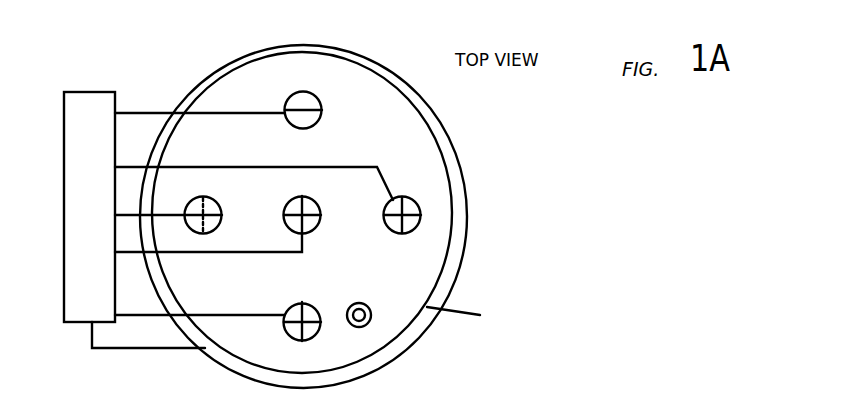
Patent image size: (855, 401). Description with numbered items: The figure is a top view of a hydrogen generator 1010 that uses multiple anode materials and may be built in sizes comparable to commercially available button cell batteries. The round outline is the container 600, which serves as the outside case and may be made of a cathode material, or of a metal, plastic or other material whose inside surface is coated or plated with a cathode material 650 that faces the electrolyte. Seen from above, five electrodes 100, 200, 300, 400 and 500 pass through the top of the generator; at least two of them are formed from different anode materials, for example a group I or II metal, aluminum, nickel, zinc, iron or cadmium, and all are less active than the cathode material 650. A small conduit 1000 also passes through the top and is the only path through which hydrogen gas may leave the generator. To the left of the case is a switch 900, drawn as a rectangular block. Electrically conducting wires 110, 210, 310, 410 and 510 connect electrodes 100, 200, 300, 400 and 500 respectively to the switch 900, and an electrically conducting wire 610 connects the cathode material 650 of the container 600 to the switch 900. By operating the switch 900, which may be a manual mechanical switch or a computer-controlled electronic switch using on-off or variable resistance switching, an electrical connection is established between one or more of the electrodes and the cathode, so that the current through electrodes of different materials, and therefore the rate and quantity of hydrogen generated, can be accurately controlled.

The electrode 100 is at (303, 131).
The electrically conducting wire 110 is at (229, 113).
The electrode 200 is at (206, 204).
The electrically conducting wire 210 is at (167, 214).
The electrode 300 is at (307, 204).
The electrically conducting wire 310 is at (235, 252).
The electrode 400 is at (407, 203).
The electrically conducting wire 410 is at (347, 167).
The electrode 500 is at (306, 312).
The electrically conducting wire 510 is at (250, 315).
The container 600 is at (472, 200).
The electrically conducting wire 610 is at (147, 352).
The cathode material 650 is at (485, 308).
The switch 900 is at (88, 100).
The conduit 1000 is at (371, 306).
The hydrogen generator 1010 is at (552, 148).